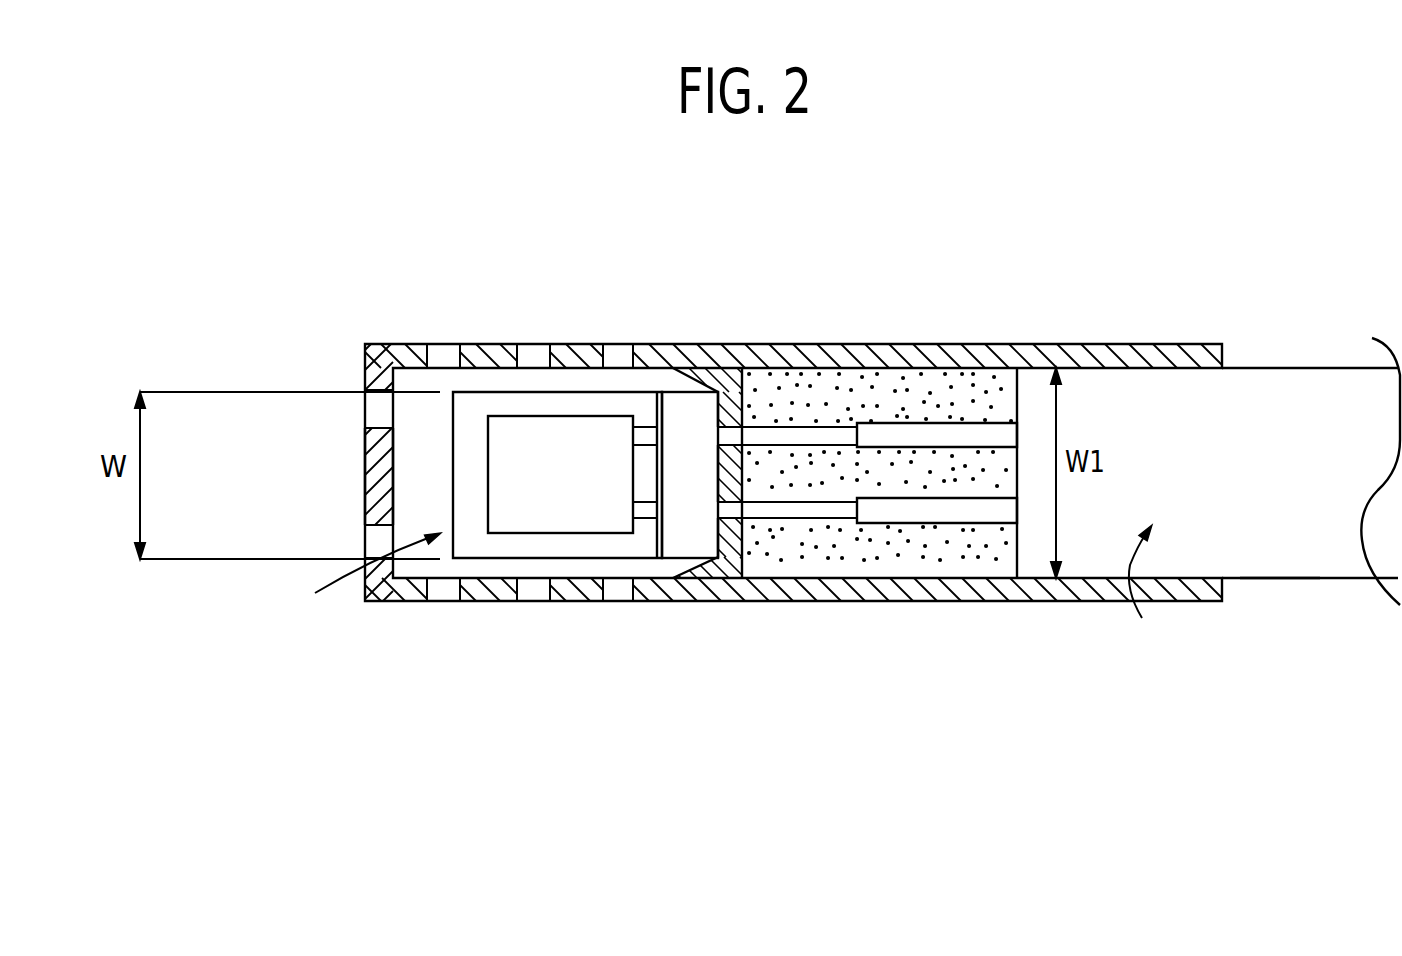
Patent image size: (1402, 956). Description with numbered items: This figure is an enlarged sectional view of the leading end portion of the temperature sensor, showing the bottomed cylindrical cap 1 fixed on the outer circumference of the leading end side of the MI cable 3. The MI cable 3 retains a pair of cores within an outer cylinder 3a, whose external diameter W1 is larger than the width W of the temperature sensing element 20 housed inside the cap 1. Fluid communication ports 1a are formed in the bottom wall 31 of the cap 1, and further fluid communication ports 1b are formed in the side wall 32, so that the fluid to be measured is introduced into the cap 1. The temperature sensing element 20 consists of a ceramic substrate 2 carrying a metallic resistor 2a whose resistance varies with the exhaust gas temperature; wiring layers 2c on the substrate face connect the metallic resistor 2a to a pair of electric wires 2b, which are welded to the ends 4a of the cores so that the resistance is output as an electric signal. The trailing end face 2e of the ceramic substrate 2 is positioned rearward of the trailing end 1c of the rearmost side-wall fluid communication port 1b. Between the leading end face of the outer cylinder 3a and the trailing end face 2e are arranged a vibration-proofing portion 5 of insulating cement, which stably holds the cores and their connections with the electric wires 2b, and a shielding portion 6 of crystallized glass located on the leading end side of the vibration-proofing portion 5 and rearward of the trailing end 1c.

The cap 1 is at (1110, 350).
The fluid communication ports 1a is at (388, 425).
The fluid communication ports 1b is at (617, 345).
The trailing end of fluid communication port 1c is at (622, 345).
The ceramic substrate 2 is at (562, 546).
The metallic resistor 2a is at (510, 443).
The electric wires 2b is at (758, 437).
The wiring layers 2c is at (650, 442).
The trailing end face of ceramic substrate 2e is at (717, 482).
The MI cable 3 is at (1263, 517).
The outer cylinder 3a is at (1277, 565).
The ends of cores 4a is at (893, 438).
The vibration-proofing portion 5 is at (777, 563).
The shielding portion 6 is at (688, 572).
The temperature sensing element 20 is at (360, 585).
The bottom wall 31 is at (365, 470).
The side wall 32 is at (552, 345).